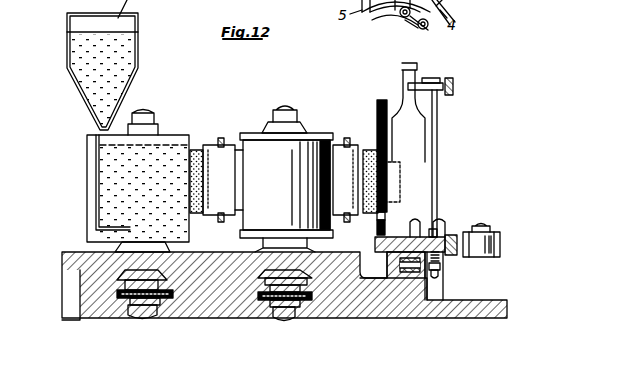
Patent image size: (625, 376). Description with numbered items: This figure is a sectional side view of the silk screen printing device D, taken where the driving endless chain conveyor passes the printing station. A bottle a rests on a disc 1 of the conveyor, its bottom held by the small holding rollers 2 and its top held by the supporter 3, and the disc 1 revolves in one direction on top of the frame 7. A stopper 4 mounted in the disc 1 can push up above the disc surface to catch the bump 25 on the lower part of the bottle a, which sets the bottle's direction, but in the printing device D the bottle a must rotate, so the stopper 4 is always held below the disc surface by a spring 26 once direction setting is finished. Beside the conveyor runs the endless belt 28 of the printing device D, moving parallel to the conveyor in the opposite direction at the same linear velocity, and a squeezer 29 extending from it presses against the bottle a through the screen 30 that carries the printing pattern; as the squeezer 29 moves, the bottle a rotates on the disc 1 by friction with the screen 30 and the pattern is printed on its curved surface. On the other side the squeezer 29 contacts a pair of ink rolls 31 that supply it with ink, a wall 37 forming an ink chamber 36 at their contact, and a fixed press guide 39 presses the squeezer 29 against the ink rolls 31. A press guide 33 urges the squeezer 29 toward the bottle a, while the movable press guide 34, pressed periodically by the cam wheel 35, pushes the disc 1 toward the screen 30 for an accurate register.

The disc 1 is at (376, 245).
The holding roller 2 is at (436, 222).
The supporter 3 is at (416, 83).
The stopper 4 is at (437, 232).
The frame 7 is at (413, 318).
The bump 25 is at (402, 233).
The spring 26 is at (440, 265).
The endless belt 28 is at (313, 140).
The squeezer 29 is at (200, 150).
The screen 30 is at (378, 118).
The ink roll 31 is at (122, 173).
The press guide 33 is at (346, 138).
The movable press guide 34 is at (452, 236).
The cam wheel 35 is at (500, 240).
The liquid 36 is at (110, 184).
The wall 37 is at (96, 157).
The fixed press guide 39 is at (222, 138).
The bottle a is at (420, 168).
The printing device D is at (359, 105).